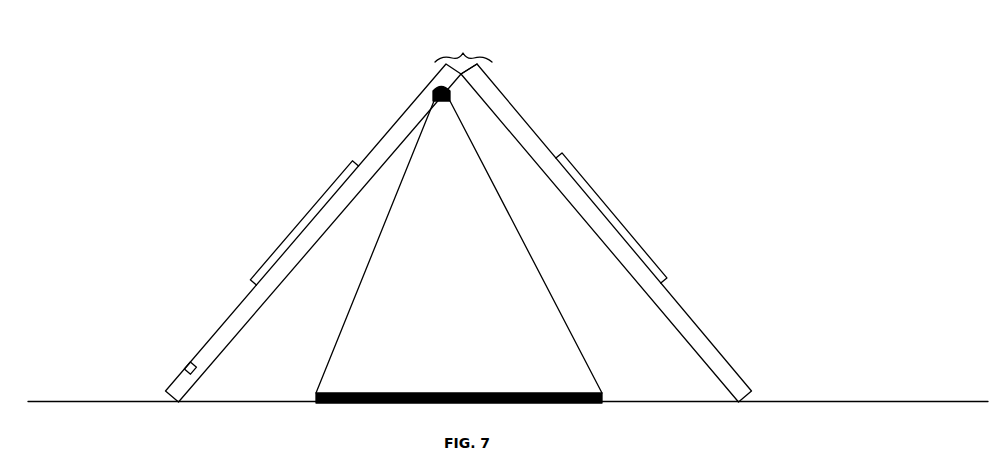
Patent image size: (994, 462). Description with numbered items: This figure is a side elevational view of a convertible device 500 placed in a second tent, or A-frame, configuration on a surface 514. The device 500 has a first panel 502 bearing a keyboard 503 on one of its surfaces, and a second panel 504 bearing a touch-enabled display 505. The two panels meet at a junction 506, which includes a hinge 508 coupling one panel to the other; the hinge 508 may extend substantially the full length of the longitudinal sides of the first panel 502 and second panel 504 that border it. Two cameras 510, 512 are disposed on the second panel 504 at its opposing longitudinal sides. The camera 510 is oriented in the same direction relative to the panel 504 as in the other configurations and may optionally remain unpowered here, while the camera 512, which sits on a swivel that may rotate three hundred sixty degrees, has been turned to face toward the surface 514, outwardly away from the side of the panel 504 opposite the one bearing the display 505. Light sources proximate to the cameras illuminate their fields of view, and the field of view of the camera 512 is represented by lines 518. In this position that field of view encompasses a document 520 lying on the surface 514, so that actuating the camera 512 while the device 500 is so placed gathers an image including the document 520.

The convertible device 500 is at (697, 65).
The first panel 502 is at (606, 232).
The keyboard 503 is at (611, 218).
The second panel 504 is at (314, 233).
The touch-enabled display 505 is at (304, 223).
The junction 506 is at (463, 47).
The hinge 508 is at (504, 70).
The camera 510 is at (163, 359).
The camera 512 is at (411, 85).
The surface 514 is at (786, 401).
The lines 518 is at (459, 247).
The document 520 is at (459, 387).